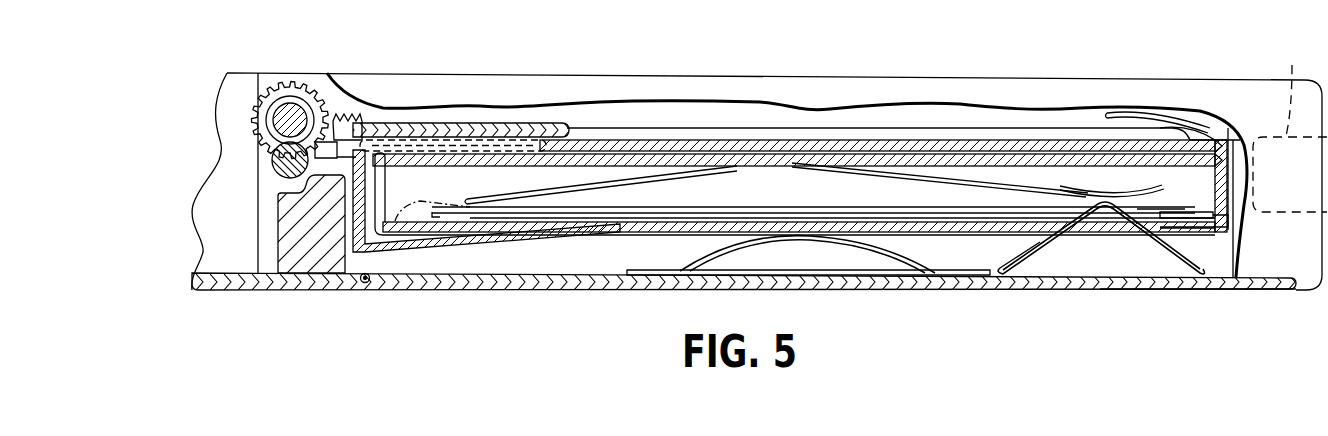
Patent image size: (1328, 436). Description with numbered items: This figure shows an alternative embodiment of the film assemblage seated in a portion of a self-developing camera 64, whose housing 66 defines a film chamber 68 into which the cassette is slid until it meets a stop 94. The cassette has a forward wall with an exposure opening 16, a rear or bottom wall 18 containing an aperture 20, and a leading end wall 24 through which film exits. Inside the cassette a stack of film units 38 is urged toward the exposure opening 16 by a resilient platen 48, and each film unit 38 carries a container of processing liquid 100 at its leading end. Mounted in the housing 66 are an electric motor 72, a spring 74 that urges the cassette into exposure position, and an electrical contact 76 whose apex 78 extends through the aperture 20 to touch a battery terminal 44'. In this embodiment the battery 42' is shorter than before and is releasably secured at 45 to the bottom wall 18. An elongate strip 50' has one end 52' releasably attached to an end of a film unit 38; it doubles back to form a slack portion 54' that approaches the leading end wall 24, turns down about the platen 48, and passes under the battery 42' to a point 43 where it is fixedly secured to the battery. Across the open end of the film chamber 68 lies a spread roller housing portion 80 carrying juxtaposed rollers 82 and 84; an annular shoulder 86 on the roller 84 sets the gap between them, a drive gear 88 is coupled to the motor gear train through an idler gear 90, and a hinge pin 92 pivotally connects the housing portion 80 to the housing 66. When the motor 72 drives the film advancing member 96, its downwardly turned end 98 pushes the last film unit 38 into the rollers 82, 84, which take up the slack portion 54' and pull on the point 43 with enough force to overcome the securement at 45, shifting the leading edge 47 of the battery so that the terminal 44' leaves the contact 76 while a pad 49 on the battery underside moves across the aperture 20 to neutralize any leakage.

The exposure opening 16 is at (578, 137).
The rear wall 18 is at (493, 242).
The aperture 20 is at (1143, 231).
The leading end wall 24 is at (343, 197).
The film unit 38 is at (743, 141).
The battery 42' is at (813, 195).
The point of fixed securement 43 is at (893, 218).
The battery terminal 44' is at (1112, 198).
The releasable securement 45 is at (1207, 216).
The leading edge of the battery 47 is at (420, 208).
The resilient platen 48 is at (678, 178).
The pad 49 is at (1162, 231).
The elongate strip 50' is at (801, 187).
The end of the elongate strip 52' is at (1189, 115).
The slack portion 54' is at (940, 180).
The camera portion 64 is at (918, 79).
The housing 66 is at (1312, 290).
The film chamber 68 is at (578, 247).
The electric motor 72 is at (1290, 126).
The spring 74 is at (713, 256).
The electrical contact 76 is at (1067, 238).
The apex 78 is at (1105, 222).
The spread roller housing portion 80 is at (236, 291).
The roller 82 is at (276, 157).
The roller 84 is at (278, 122).
The annular shoulder 86 is at (259, 102).
The drive gear 88 is at (283, 83).
The idler gear 90 is at (336, 114).
The hinge pin 92 is at (369, 285).
The stop 94 is at (1243, 220).
The film advancing member 96 is at (1140, 110).
The downwardly turned end 98 is at (1246, 175).
The container of processing liquid 100 is at (470, 141).